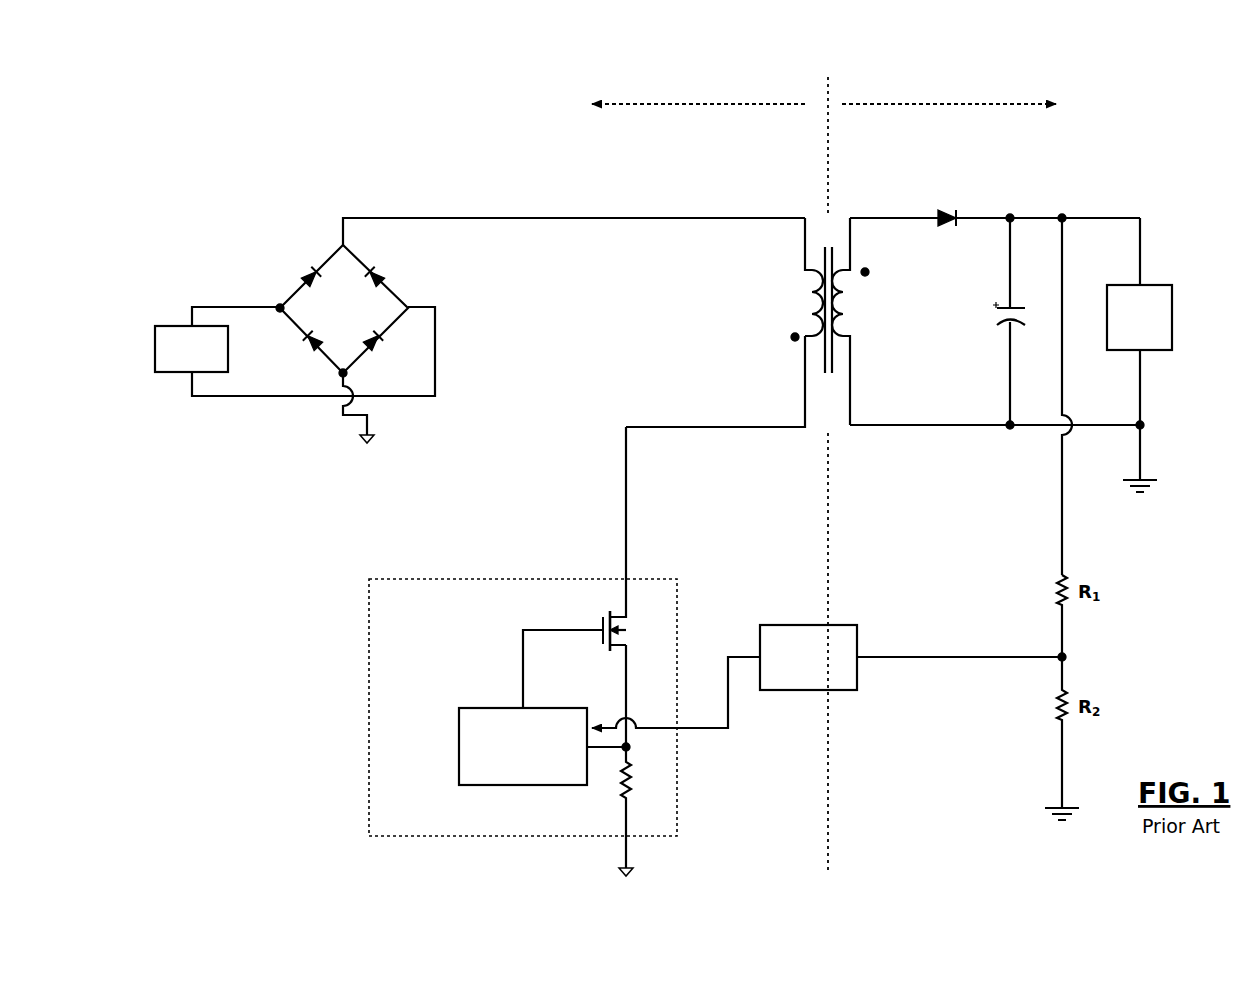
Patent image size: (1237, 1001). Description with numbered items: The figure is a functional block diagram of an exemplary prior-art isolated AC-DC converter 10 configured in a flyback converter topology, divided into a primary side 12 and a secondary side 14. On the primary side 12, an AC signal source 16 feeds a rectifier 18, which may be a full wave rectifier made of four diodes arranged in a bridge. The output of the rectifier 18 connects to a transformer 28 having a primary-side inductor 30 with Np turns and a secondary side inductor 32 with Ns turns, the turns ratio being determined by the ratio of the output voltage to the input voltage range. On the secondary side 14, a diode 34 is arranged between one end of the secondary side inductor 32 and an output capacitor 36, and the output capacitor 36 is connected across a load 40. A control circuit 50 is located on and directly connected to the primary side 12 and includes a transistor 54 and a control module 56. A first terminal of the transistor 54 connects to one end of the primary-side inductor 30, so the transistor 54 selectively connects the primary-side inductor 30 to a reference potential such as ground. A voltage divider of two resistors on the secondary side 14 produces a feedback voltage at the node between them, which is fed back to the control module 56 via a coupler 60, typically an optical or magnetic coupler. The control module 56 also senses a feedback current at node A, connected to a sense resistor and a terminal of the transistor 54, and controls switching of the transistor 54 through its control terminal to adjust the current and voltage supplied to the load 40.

The AC-DC converter 10 is at (333, 148).
The primary side 12 is at (706, 55).
The secondary side 14 is at (925, 55).
The AC signal source 16 is at (183, 326).
The rectifier 18 is at (424, 290).
The transformer 28 is at (805, 200).
The primary-side inductor 30 is at (767, 282).
The secondary side inductor 32 is at (886, 331).
The diode 34 is at (947, 212).
The output capacitor 36 is at (1004, 308).
The load 40 is at (1125, 285).
The control circuit 50 is at (546, 651).
The transistor 54 is at (658, 627).
The control module 56 is at (483, 708).
The coupler 60 is at (793, 625).